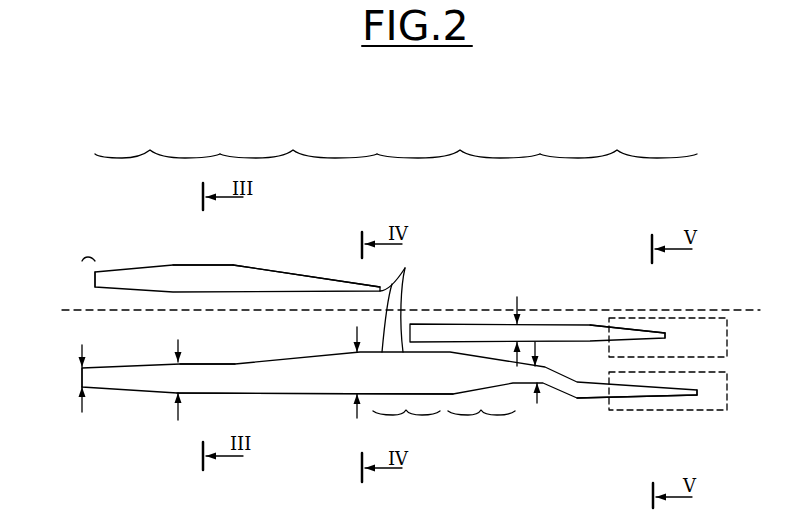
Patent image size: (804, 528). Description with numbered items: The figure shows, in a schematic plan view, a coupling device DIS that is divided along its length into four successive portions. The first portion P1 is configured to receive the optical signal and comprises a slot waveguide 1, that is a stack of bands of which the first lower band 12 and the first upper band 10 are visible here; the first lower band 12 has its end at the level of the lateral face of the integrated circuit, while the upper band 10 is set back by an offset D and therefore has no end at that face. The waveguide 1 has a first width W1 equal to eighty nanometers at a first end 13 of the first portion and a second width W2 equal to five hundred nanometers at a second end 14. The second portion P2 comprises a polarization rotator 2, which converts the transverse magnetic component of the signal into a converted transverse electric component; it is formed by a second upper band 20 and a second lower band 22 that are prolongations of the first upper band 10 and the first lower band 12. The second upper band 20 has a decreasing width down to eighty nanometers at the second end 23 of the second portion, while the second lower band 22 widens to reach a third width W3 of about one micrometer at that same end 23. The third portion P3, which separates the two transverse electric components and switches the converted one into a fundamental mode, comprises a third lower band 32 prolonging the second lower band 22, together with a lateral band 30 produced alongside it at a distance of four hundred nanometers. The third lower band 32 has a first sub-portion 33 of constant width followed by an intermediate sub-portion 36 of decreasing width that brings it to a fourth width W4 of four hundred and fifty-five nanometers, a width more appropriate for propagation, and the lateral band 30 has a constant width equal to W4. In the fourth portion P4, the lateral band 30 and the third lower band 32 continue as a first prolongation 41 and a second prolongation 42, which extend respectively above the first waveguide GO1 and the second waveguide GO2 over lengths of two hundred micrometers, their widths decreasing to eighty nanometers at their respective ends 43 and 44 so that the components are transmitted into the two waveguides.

The slot waveguide 1 is at (102, 235).
The polarization rotator 2 is at (327, 252).
The first upper band 10 is at (136, 268).
The first lower band 12 is at (130, 395).
The first end 13 is at (95, 280).
The second end 14 is at (205, 265).
The second upper band 20 is at (290, 273).
The second lower band 22 is at (313, 396).
The second end 23 is at (407, 276).
The lateral band 30 is at (477, 323).
The third lower band 32 is at (409, 323).
The first sub-portion 33 is at (406, 427).
The intermediate sub-portion 36 is at (481, 427).
The first prolongation 41 is at (602, 398).
The second prolongation 42 is at (623, 325).
The end of first prolongation 43 is at (698, 393).
The end of second prolongation 44 is at (668, 333).
The offset D is at (88, 246).
The coupling device DIS is at (88, 133).
The first waveguide GO1 is at (674, 411).
The second waveguide GO2 is at (689, 318).
The first portion P1 is at (157, 142).
The second portion P2 is at (298, 142).
The third portion P3 is at (458, 142).
The fourth portion P4 is at (618, 142).
The first width W1 is at (66, 372).
The second width W2 is at (160, 376).
The third width W3 is at (340, 369).
The fourth width W4 is at (546, 357).